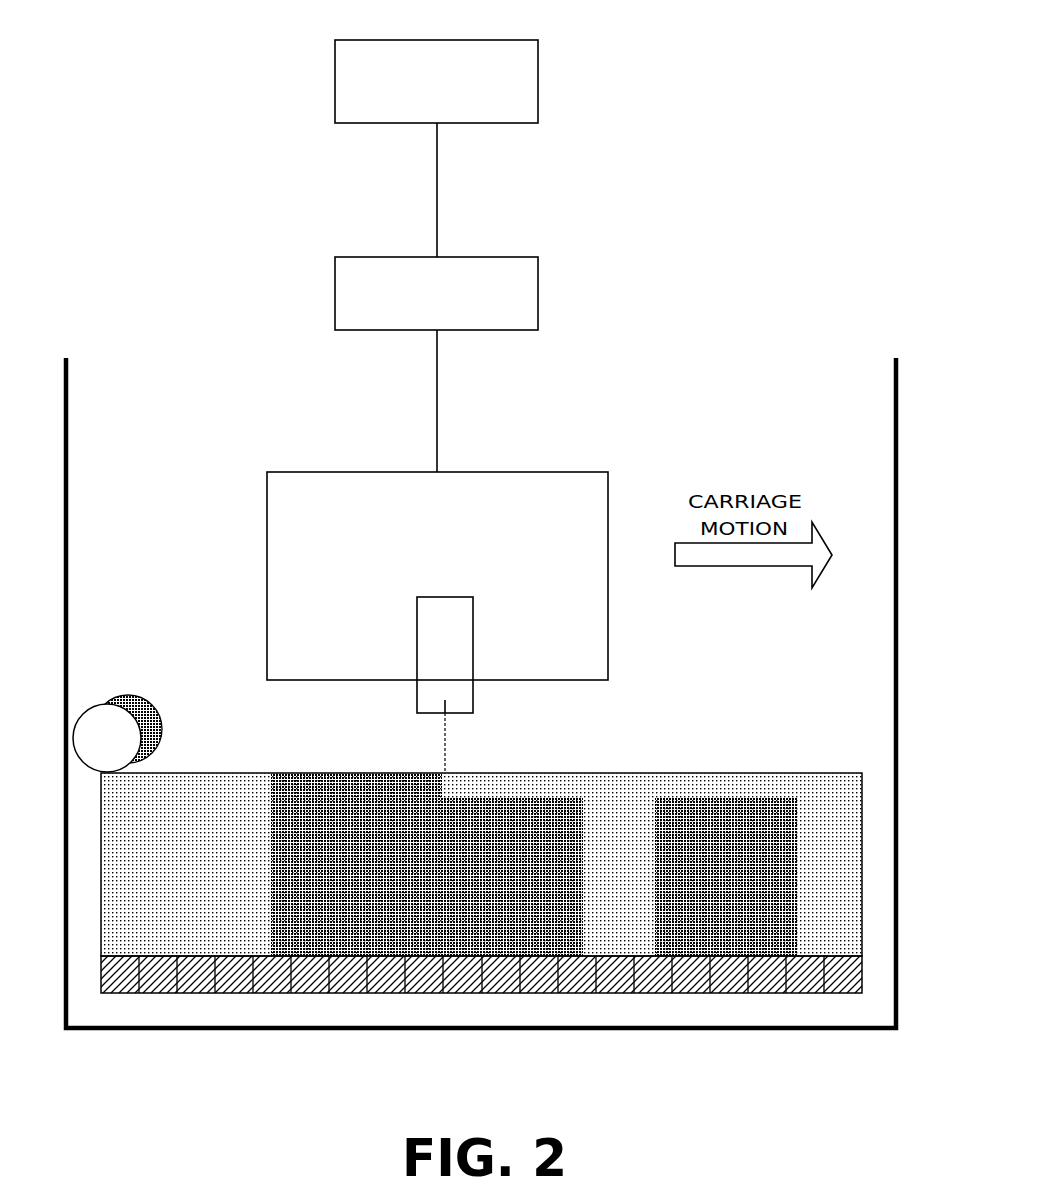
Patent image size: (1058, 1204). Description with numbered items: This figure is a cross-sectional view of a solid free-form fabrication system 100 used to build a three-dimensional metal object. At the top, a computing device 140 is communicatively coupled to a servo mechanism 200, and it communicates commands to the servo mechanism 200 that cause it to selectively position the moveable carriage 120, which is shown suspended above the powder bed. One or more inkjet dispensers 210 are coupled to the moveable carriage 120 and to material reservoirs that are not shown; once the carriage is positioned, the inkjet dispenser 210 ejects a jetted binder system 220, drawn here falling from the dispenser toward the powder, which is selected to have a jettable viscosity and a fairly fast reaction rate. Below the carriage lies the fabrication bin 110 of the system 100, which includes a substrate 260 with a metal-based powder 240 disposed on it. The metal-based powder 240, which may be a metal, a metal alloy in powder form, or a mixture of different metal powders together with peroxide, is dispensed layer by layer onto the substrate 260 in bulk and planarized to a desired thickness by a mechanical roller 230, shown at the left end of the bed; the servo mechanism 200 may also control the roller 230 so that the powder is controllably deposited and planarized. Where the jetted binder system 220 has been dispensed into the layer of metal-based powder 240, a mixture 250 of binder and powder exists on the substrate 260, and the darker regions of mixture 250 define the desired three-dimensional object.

The solid free-form fabrication system 100 is at (765, 205).
The fabrication bin 110 is at (108, 358).
The moveable carriage 120 is at (457, 519).
The computing device 140 is at (538, 82).
The servo mechanism 200 is at (538, 292).
The inkjet dispenser 210 is at (473, 628).
The jetted binder system 220 is at (448, 748).
The mechanical roller 230 is at (117, 723).
The metal-based powder 240 is at (184, 770).
The mixture 250 is at (320, 770).
The substrate 260 is at (611, 996).